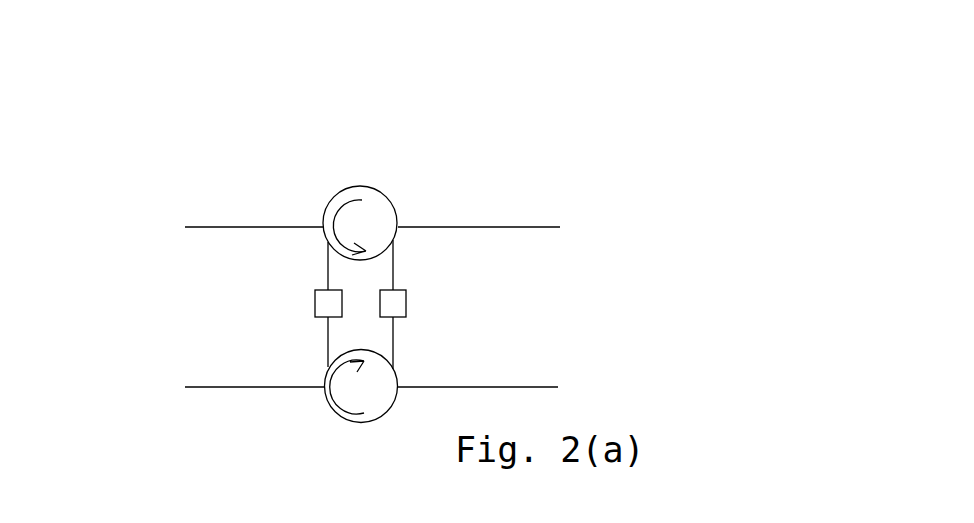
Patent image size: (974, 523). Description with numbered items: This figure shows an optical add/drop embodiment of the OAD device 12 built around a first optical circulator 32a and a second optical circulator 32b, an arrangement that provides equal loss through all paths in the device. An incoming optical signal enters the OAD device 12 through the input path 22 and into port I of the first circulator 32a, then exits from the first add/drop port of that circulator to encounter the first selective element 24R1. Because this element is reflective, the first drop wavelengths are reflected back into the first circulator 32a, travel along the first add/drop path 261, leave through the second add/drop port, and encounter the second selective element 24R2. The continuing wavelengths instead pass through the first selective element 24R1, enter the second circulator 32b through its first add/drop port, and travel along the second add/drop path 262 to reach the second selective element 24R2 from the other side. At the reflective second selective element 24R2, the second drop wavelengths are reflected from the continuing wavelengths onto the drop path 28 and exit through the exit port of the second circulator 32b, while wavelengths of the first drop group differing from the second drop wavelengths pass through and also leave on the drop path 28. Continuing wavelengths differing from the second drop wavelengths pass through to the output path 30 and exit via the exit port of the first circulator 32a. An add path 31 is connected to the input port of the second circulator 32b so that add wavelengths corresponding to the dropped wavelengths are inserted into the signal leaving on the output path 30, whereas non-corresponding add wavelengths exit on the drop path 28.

The OAD device 12 is at (533, 115).
The input path 22 is at (252, 227).
The output path 30 is at (505, 227).
The add path 31 is at (268, 387).
The drop path 28 is at (532, 387).
The first optical circulator 32a is at (363, 186).
The second optical circulator 32b is at (363, 423).
The first selective element 24R1 is at (280, 304).
The second selective element 24R2 is at (440, 301).
The first add/drop path 261 is at (397, 265).
The second add/drop path 262 is at (397, 343).